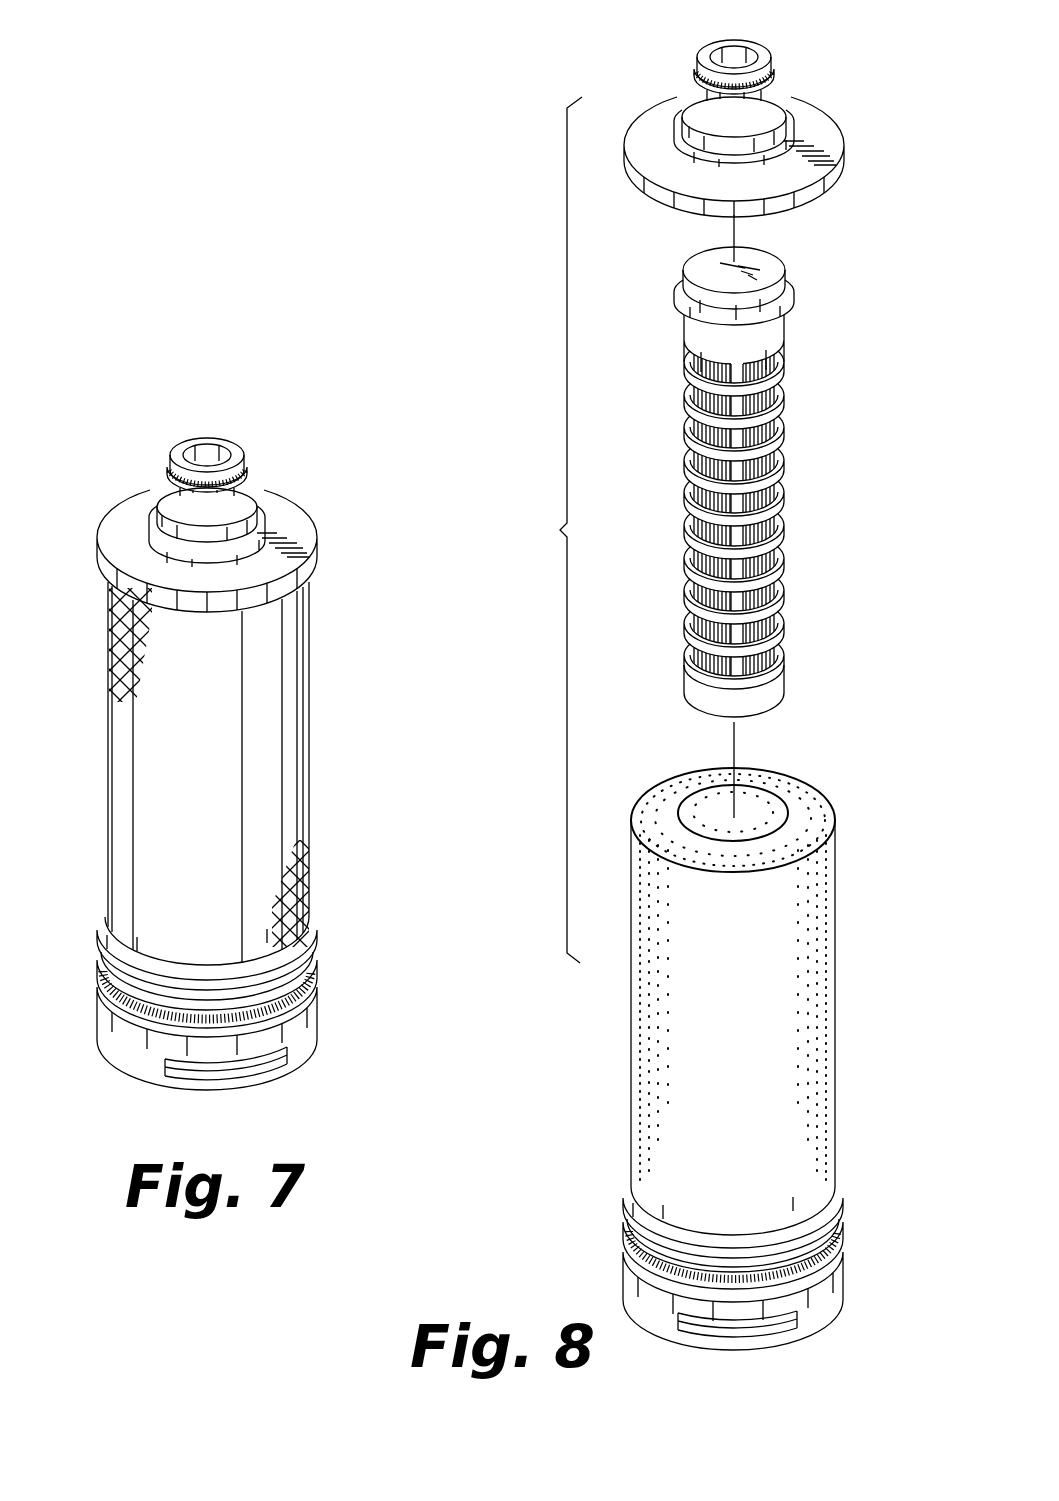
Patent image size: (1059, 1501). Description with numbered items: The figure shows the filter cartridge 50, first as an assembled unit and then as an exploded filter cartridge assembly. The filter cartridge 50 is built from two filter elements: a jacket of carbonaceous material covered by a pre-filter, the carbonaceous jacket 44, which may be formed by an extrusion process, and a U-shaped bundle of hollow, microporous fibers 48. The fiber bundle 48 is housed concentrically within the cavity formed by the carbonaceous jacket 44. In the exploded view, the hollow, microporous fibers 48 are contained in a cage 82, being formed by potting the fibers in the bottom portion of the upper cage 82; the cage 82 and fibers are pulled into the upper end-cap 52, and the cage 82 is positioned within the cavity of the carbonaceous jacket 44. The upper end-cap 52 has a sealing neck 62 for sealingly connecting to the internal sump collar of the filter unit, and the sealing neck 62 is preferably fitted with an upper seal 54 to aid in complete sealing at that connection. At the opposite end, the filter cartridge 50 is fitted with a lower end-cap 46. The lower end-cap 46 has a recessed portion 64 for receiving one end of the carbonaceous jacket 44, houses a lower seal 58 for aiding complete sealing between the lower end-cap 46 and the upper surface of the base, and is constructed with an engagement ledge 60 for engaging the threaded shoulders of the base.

In FIG. 7, the filter cartridge 50 is at (103, 412).
In FIG. 7, the sealing neck 62 is at (234, 421).
In FIG. 7, the upper seal 54 is at (255, 442).
In FIG. 7, the upper end-cap 52 is at (234, 531).
In FIG. 8, the upper end-cap 52 is at (750, 112).
In FIG. 7, the carbonaceous jacket 44 is at (305, 698).
In FIG. 8, the carbonaceous jacket 44 is at (834, 945).
In FIG. 7, the recessed portion 64 is at (318, 928).
In FIG. 7, the lower seal 58 is at (318, 985).
In FIG. 7, the lower end-cap 46 is at (80, 958).
In FIG. 8, the lower end-cap 46 is at (852, 1200).
In FIG. 7, the engagement ledge 60 is at (258, 1076).
In FIG. 8, the hollow, microporous fiber bundle 48 is at (685, 380).
In FIG. 8, the upper cage 82 is at (790, 332).